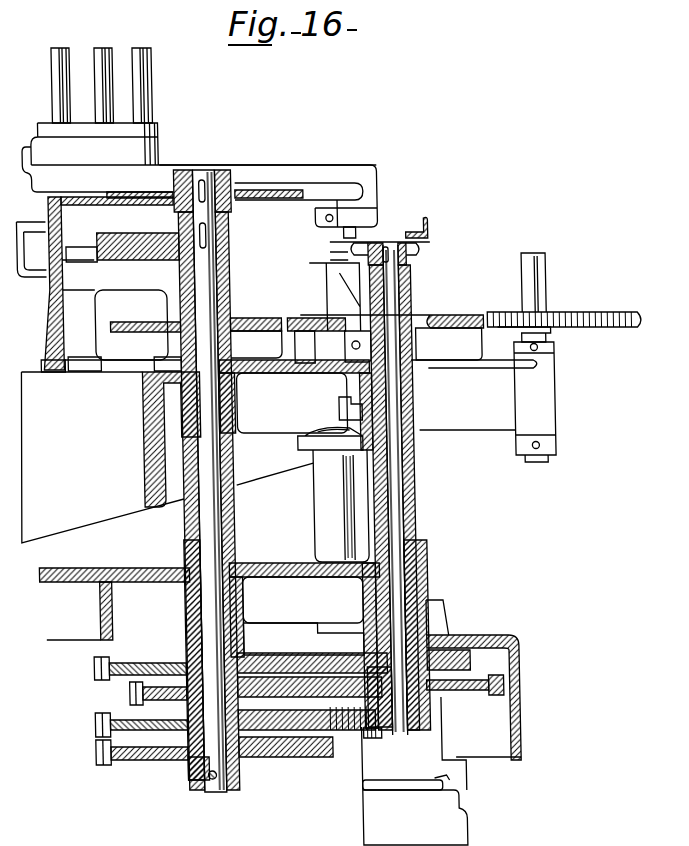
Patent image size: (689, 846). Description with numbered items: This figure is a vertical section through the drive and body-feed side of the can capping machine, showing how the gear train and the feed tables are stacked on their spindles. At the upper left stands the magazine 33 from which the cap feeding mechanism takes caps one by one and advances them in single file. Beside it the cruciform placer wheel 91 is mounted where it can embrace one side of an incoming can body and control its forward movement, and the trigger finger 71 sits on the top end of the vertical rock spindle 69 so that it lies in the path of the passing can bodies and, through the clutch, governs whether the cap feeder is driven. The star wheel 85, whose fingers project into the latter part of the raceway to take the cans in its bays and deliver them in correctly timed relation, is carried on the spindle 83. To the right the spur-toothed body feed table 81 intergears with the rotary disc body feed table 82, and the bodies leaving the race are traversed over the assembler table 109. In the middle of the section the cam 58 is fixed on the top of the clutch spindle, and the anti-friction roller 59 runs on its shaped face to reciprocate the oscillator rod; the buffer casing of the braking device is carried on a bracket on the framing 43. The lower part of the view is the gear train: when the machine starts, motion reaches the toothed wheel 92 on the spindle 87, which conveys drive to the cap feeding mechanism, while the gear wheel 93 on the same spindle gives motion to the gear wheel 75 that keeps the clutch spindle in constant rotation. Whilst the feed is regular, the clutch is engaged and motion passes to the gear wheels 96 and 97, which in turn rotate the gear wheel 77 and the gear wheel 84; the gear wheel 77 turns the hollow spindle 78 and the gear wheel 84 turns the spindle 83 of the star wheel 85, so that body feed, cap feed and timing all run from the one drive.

The magazine 33 is at (93, 106).
The cruciform placer wheel 91 is at (272, 196).
The trigger finger 71 is at (382, 197).
The vertical rock spindle 69 is at (362, 234).
The star wheel 85 is at (411, 262).
The assembler table 109 is at (256, 318).
The body feed table 81 is at (460, 318).
The rotary disc body feed table 82 is at (502, 326).
The anti-friction roller 59 is at (345, 410).
The cam 58 is at (300, 441).
The framing 43 is at (313, 500).
The hollow spindle 78 is at (403, 492).
The spindle 83 is at (395, 517).
The spindle 87 is at (204, 512).
The gear wheel 77 is at (480, 645).
The gear wheel 84 is at (499, 685).
The gear wheel 96 is at (90, 670).
The gear wheel 97 is at (125, 693).
The gear wheel 93 is at (90, 726).
The toothed wheel 92 is at (90, 752).
The gear wheel 75 is at (370, 738).